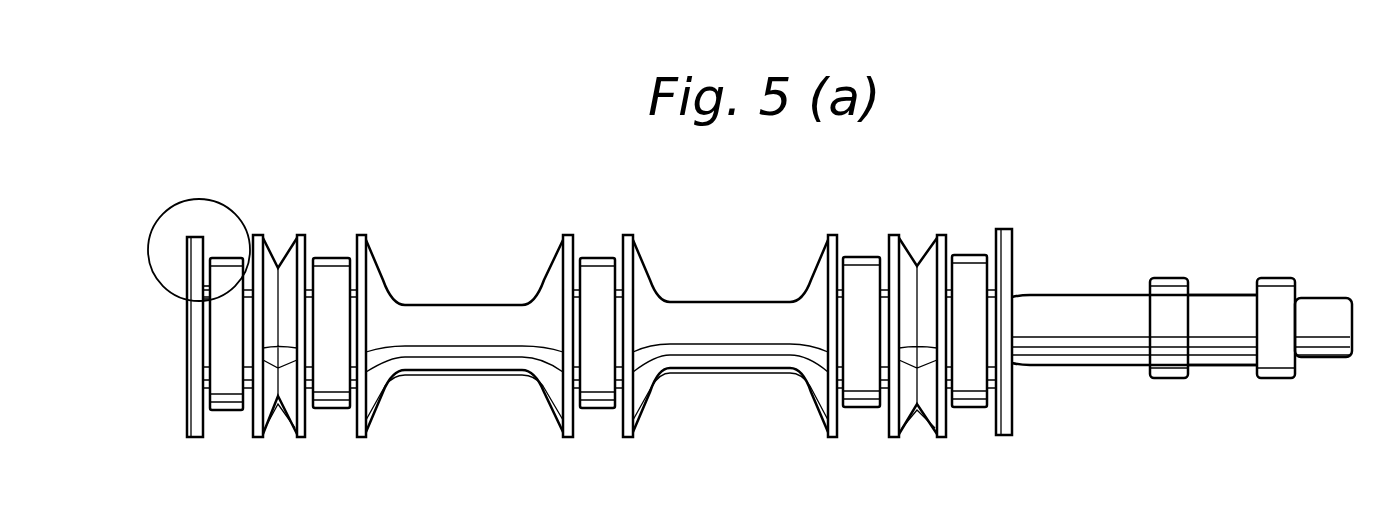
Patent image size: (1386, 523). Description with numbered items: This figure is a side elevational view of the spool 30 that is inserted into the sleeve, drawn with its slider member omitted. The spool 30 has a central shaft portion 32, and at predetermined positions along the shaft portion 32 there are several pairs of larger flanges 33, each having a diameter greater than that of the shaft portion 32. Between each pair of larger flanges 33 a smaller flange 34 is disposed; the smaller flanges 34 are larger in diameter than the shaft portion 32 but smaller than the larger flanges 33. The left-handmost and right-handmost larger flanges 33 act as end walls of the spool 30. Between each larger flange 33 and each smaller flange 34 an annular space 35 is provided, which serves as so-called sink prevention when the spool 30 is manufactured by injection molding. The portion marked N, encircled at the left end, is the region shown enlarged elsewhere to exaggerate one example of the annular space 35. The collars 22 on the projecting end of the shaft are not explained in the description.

The spool 30 is at (733, 246).
The shaft portion 32 is at (728, 352).
The larger flange 33 is at (265, 250).
The smaller flange 34 is at (228, 412).
The annular space 35 is at (203, 258).
The collar 22 is at (1168, 278).
The portion N is at (167, 199).